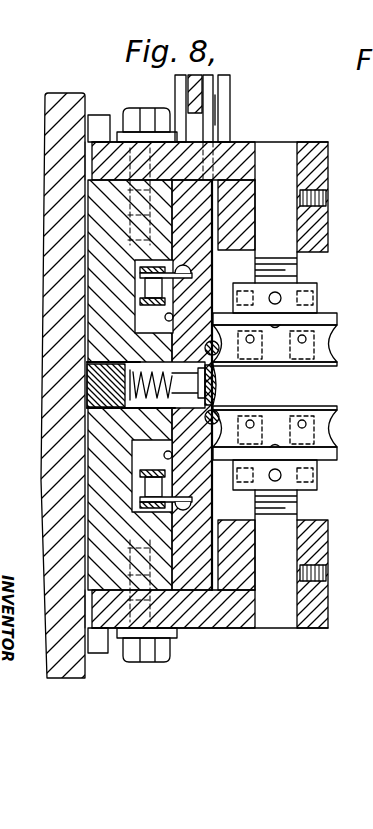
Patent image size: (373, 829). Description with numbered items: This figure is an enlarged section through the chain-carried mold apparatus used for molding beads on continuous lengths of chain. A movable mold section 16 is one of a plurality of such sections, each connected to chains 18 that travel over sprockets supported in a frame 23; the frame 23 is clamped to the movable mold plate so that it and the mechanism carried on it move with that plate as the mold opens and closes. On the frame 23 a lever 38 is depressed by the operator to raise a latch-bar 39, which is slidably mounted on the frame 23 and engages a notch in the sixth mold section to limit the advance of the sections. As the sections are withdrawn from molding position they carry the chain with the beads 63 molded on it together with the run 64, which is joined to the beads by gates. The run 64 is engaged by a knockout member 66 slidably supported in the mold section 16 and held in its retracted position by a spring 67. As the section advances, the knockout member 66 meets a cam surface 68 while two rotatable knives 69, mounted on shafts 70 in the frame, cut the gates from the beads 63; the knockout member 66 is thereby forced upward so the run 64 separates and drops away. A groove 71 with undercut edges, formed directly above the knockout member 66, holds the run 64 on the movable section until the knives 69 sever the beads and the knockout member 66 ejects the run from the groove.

The movable mold section 16 is at (200, 437).
The chain 18 is at (162, 386).
The frame 23 is at (78, 672).
The lever 38 is at (192, 89).
The latch-bar 39 is at (207, 124).
The bead 63 is at (216, 340).
The run 64 is at (216, 393).
The knockout member 66 is at (88, 390).
The spring 67 is at (200, 397).
The cam surface 68 is at (100, 370).
The rotatable knife 69 is at (330, 412).
The shaft 70 is at (283, 233).
The groove 71 is at (205, 414).